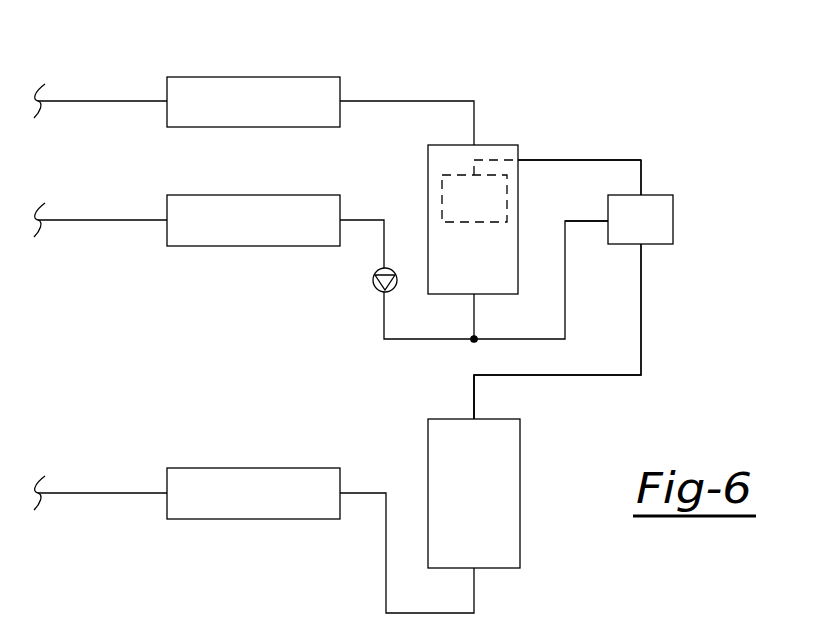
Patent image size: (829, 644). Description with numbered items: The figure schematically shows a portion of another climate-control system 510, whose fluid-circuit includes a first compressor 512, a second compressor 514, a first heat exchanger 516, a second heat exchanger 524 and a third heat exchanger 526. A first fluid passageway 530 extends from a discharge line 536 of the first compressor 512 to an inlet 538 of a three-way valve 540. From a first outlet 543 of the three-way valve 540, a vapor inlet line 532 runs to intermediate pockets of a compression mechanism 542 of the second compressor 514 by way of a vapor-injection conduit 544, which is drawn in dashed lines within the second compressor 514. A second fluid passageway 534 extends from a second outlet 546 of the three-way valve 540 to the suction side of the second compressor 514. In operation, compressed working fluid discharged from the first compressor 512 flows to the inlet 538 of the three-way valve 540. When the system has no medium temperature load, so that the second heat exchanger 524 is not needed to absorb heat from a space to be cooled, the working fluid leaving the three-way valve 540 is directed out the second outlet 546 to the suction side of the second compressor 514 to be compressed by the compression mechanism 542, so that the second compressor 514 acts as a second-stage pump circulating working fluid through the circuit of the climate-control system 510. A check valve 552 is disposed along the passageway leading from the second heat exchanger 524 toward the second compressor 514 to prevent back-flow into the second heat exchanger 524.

The climate-control system 510 is at (584, 67).
The first compressor 512 is at (539, 420).
The second compressor 514 is at (422, 203).
The first heat exchanger 516 is at (167, 88).
The second heat exchanger 524 is at (167, 207).
The third heat exchanger 526 is at (167, 480).
The first fluid passageway 530 is at (670, 357).
The vapor inlet line 532 is at (614, 144).
The second fluid passageway 534 is at (357, 208).
The discharge line 536 is at (474, 395).
The inlet 538 is at (641, 245).
The 3-way valve 540 is at (684, 216).
The compression mechanism 542 is at (474, 226).
The first outlet 543 is at (645, 195).
The vapor-injection conduit 544 is at (495, 160).
The second outlet 546 is at (608, 221).
The check valve 552 is at (372, 281).